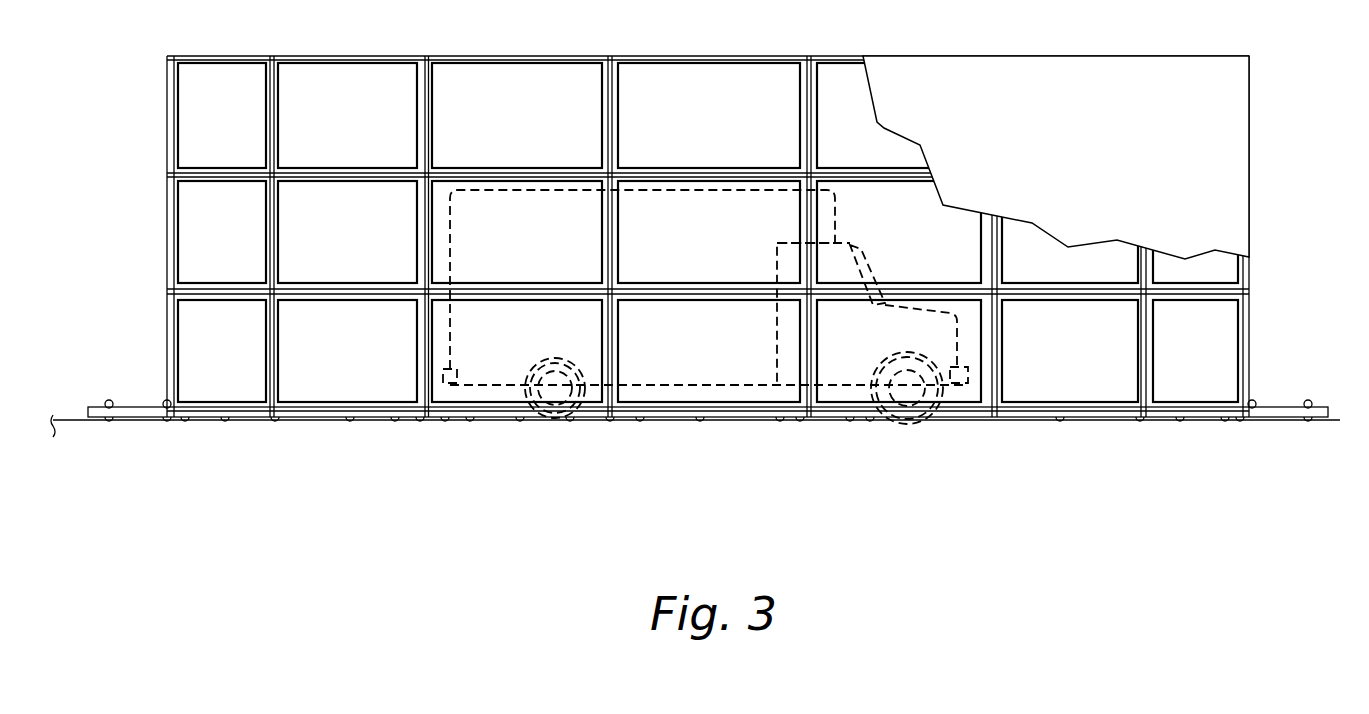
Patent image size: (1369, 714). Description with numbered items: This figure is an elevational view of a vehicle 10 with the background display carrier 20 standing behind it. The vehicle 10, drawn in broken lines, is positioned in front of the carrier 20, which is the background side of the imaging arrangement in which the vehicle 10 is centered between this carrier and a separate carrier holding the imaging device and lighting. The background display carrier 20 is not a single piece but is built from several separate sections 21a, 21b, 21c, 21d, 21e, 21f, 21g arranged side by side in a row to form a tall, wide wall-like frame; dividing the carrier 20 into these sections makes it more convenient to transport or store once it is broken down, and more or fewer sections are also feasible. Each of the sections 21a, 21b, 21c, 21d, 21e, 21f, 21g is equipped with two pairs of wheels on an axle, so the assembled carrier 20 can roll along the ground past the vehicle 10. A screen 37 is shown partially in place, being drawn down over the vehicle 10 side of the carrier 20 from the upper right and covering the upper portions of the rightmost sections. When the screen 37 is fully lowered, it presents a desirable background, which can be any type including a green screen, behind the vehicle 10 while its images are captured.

The background display carrier 20 is at (167, 94).
The screen 37 is at (1090, 152).
The vehicle 10 is at (851, 244).
The section 21a is at (217, 410).
The section 21b is at (340, 410).
The section 21c is at (507, 410).
The section 21d is at (703, 410).
The section 21e is at (945, 410).
The section 21f is at (1085, 410).
The section 21g is at (1198, 410).